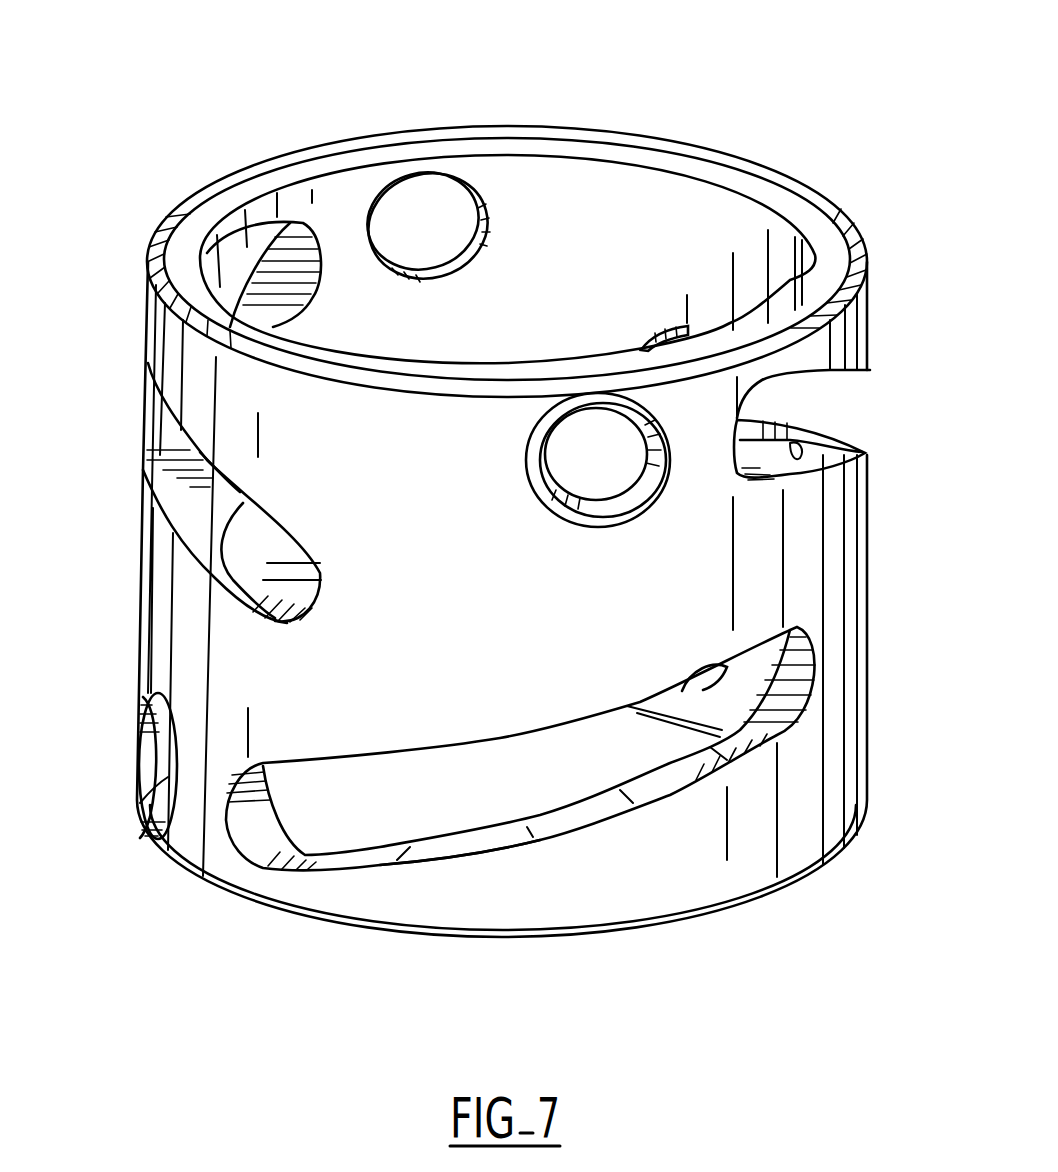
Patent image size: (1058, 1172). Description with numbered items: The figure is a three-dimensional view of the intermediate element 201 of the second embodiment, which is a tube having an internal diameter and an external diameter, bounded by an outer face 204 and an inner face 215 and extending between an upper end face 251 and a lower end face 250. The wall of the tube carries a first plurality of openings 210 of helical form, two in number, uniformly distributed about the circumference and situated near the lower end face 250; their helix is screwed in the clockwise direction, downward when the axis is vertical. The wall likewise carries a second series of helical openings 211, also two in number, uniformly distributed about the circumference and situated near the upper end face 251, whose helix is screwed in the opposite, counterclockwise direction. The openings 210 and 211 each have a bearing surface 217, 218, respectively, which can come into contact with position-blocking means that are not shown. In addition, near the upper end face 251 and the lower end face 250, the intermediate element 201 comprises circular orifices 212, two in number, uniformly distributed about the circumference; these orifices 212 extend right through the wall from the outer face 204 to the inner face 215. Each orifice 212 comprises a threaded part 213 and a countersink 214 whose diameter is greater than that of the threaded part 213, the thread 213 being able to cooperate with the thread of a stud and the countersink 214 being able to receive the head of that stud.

The intermediate element 201 is at (505, 532).
The outer face 204 is at (805, 584).
The first plurality of openings 210 is at (573, 780).
The second series of helical openings 211 is at (815, 402).
The circular orifices 212 is at (565, 458).
The threaded part 213 is at (487, 243).
The countersink 214 is at (604, 505).
The inner face 215 is at (704, 205).
The bearing surface 217 is at (430, 843).
The bearing surface 218 is at (232, 500).
The lower end face 250 is at (532, 957).
The upper end face 251 is at (444, 118).